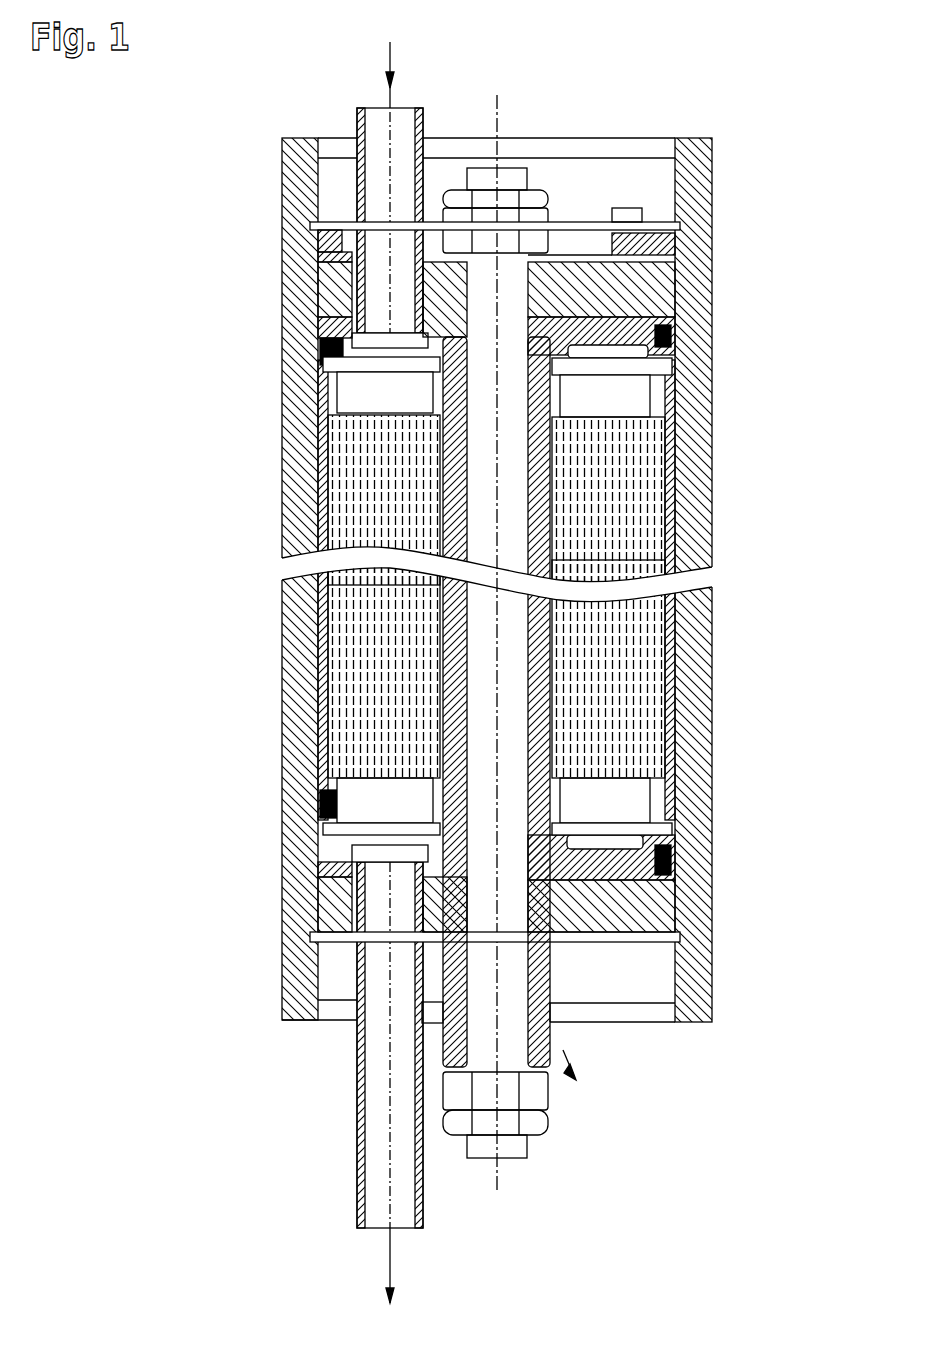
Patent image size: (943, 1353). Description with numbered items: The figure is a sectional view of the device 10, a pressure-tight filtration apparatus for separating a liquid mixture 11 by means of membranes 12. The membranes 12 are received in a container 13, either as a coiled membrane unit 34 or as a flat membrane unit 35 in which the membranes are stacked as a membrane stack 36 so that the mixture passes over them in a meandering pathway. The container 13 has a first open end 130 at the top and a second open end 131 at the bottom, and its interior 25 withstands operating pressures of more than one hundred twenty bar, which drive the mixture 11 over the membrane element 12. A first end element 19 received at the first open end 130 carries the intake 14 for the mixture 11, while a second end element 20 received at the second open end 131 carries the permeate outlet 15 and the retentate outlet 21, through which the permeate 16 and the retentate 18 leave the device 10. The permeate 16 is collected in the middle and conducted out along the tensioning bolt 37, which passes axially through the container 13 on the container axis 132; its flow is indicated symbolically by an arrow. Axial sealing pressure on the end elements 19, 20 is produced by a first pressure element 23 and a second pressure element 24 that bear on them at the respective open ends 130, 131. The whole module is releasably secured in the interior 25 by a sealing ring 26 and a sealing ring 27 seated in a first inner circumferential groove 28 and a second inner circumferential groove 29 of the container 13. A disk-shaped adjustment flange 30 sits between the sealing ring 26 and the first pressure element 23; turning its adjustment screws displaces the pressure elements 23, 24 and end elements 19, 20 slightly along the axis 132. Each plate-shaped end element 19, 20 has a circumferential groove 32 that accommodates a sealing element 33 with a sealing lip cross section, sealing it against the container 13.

The device 10 is at (752, 160).
The liquid mixture 11 is at (392, 58).
The membrane element 12 is at (635, 466).
The container 13 is at (692, 512).
The intake 14 is at (357, 112).
The permeate outlet 15 is at (570, 1003).
The permeate 16 is at (588, 1060).
The retentate 18 is at (392, 1268).
The first end element 19 is at (652, 332).
The second end element 20 is at (650, 872).
The retentate outlet 21 is at (357, 1097).
The first pressure element 23 is at (650, 288).
The second pressure element 24 is at (650, 906).
The interior 25 is at (330, 368).
The sealing ring 26 is at (672, 222).
The sealing ring 27 is at (672, 948).
The first inner circumferential groove 28 is at (310, 226).
The second inner circumferential groove 29 is at (310, 938).
The adjustment flange 30 is at (662, 244).
The groove 32 is at (655, 352).
The sealing element 33 is at (318, 346).
The coiled membrane unit 34 is at (579, 500).
The flat membrane unit 35 is at (635, 654).
The membrane stack 36 is at (579, 669).
The tensioning bolt 37 is at (514, 168).
The first open end 130 is at (618, 178).
The second open end 131 is at (662, 1003).
The container axis 132 is at (502, 1185).